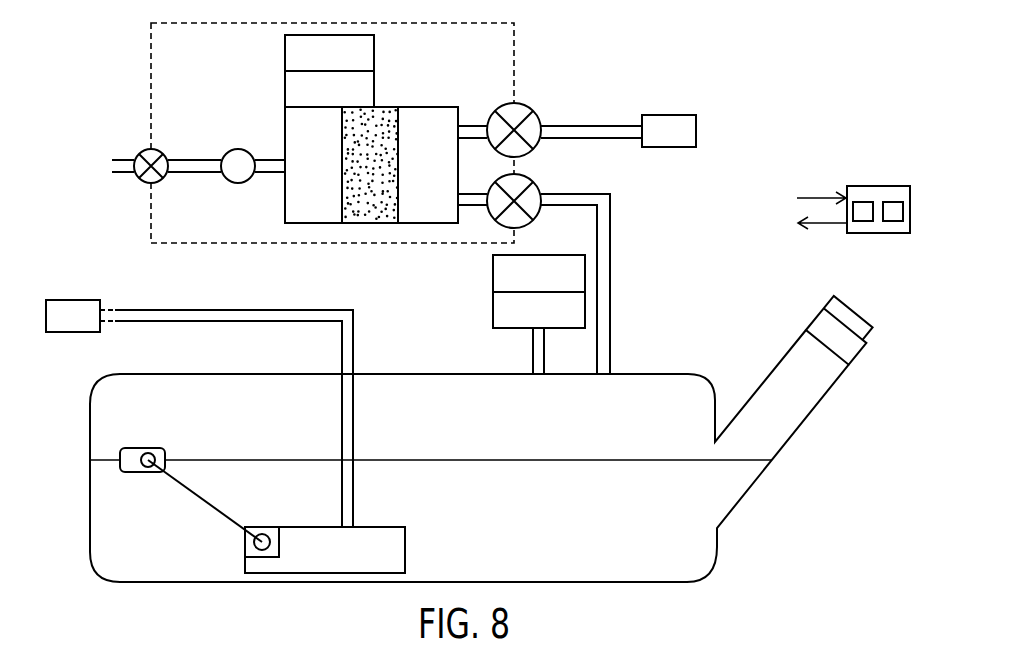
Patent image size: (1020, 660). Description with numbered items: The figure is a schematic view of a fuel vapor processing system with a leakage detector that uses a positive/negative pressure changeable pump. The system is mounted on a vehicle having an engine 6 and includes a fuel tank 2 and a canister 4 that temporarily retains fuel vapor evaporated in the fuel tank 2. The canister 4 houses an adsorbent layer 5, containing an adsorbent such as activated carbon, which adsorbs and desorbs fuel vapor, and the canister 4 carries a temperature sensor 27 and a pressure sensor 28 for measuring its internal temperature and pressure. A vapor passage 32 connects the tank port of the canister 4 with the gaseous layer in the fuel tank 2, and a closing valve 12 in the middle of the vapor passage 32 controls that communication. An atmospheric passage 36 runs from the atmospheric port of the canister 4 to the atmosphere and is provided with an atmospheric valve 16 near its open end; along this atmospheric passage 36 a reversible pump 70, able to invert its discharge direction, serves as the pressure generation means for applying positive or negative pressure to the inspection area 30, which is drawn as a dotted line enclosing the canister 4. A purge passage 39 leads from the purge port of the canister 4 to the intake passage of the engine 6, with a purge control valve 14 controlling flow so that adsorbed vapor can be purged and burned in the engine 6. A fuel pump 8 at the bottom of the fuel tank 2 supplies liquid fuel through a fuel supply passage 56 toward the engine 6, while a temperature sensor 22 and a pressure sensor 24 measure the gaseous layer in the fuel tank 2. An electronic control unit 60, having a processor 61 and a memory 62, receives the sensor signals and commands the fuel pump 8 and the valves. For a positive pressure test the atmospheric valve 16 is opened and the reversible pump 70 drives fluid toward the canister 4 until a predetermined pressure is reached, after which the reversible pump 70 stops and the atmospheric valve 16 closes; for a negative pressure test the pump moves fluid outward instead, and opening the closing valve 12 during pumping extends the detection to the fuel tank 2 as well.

The fuel tank 2 is at (689, 373).
The canister 4 is at (285, 205).
The adsorbent layer 5 is at (385, 114).
The engine 6 is at (678, 115).
The fuel pump 8 is at (405, 556).
The closing valve 12 is at (532, 182).
The purge control valve 14 is at (532, 112).
The atmospheric valve 16 is at (142, 150).
The temperature sensor 22 is at (585, 274).
The pressure sensor 24 is at (585, 310).
The temperature sensor 27 is at (285, 53).
The pressure sensor 28 is at (285, 91).
The inspection area 30 is at (150, 41).
The vapor passage 32 is at (611, 213).
The atmospheric passage 36 is at (198, 174).
The purge passage 39 is at (598, 124).
The fuel supply passage 56 is at (342, 419).
The electronic control unit 60 is at (887, 186).
The processor 61 is at (860, 221).
The memory 62 is at (895, 221).
The reversible pump 70 is at (226, 153).